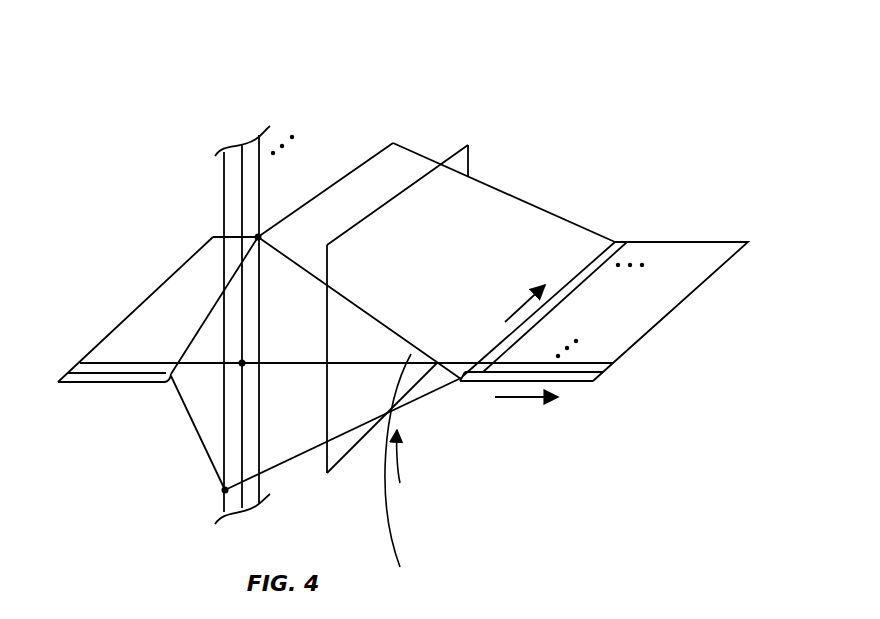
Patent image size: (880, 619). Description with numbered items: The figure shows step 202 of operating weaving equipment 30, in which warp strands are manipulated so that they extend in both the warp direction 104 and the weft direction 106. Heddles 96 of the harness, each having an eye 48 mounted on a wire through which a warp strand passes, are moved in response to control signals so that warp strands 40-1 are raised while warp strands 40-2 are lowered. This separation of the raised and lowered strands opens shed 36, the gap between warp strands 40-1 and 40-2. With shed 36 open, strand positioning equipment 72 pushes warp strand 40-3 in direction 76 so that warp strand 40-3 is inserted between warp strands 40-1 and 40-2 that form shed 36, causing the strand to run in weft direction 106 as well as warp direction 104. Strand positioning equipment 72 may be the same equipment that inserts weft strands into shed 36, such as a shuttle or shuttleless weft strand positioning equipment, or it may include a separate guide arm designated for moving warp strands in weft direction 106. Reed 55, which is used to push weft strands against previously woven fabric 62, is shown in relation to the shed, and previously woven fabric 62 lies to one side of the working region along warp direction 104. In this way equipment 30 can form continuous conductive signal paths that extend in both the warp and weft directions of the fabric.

The weaving equipment 30 is at (570, 96).
The step 202 is at (108, 164).
The heddles 96 is at (242, 184).
The eye 48 is at (259, 235).
The reed 55 is at (453, 155).
The previously woven fabric 62 is at (750, 233).
The weft direction 106 is at (518, 308).
The warp direction 104 is at (530, 401).
The shed 36 is at (436, 376).
The direction 76 is at (399, 449).
The strand positioning equipment 72 is at (387, 507).
The warp strands 40-1 is at (87, 384).
The warp strands 40-2 is at (148, 375).
The warp strand 40-3 is at (112, 362).